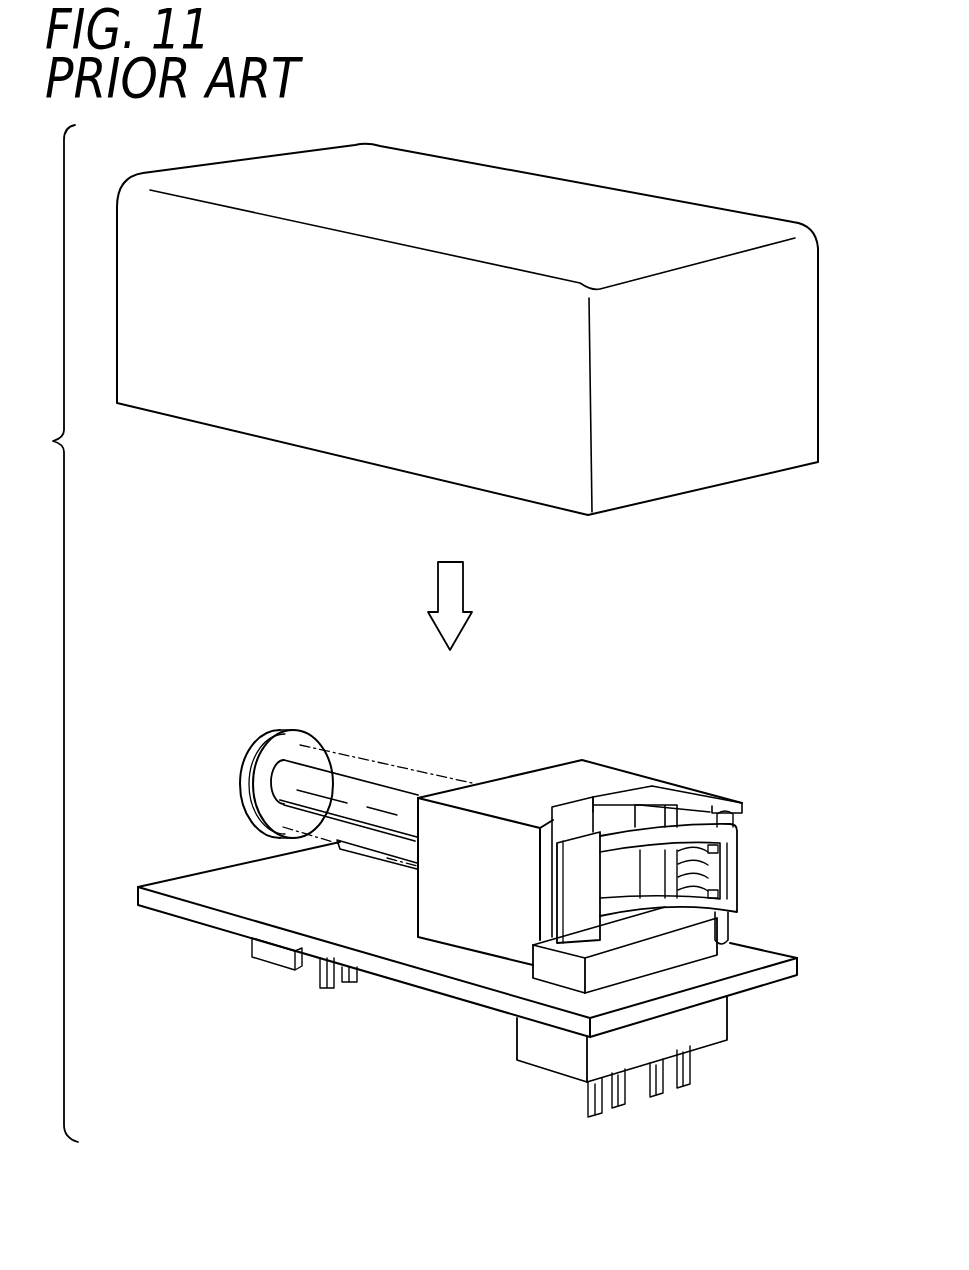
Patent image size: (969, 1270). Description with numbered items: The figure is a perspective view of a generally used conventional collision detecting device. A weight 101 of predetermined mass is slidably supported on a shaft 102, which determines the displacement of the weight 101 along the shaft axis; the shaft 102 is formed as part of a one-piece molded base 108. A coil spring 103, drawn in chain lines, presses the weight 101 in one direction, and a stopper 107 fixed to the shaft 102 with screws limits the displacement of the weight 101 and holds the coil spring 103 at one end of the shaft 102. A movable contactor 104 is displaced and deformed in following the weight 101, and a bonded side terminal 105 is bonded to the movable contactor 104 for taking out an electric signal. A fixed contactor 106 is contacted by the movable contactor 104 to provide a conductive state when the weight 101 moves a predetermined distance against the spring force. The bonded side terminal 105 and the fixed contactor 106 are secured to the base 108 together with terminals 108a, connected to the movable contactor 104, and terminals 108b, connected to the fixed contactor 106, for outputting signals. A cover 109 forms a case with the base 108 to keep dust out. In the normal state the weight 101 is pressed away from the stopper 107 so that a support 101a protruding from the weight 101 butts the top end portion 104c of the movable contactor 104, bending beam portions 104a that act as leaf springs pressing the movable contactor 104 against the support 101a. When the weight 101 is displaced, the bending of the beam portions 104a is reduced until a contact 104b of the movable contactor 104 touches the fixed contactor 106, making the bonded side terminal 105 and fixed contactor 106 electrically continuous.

The weight 101 is at (587, 765).
The support 101a is at (717, 798).
The shaft 102 is at (356, 780).
The coil spring 103 is at (400, 767).
The movable contactor 104 is at (737, 833).
The beam portions 104a is at (653, 908).
The contact 104b is at (710, 868).
The top end portion 104c is at (727, 905).
The bonded side terminal 105 is at (595, 852).
The fixed contactor 106 is at (663, 810).
The stopper 107 is at (285, 740).
The base 108 is at (797, 967).
The terminals 108a is at (587, 1103).
The terminals 108b is at (692, 1068).
The cover 109 is at (683, 207).